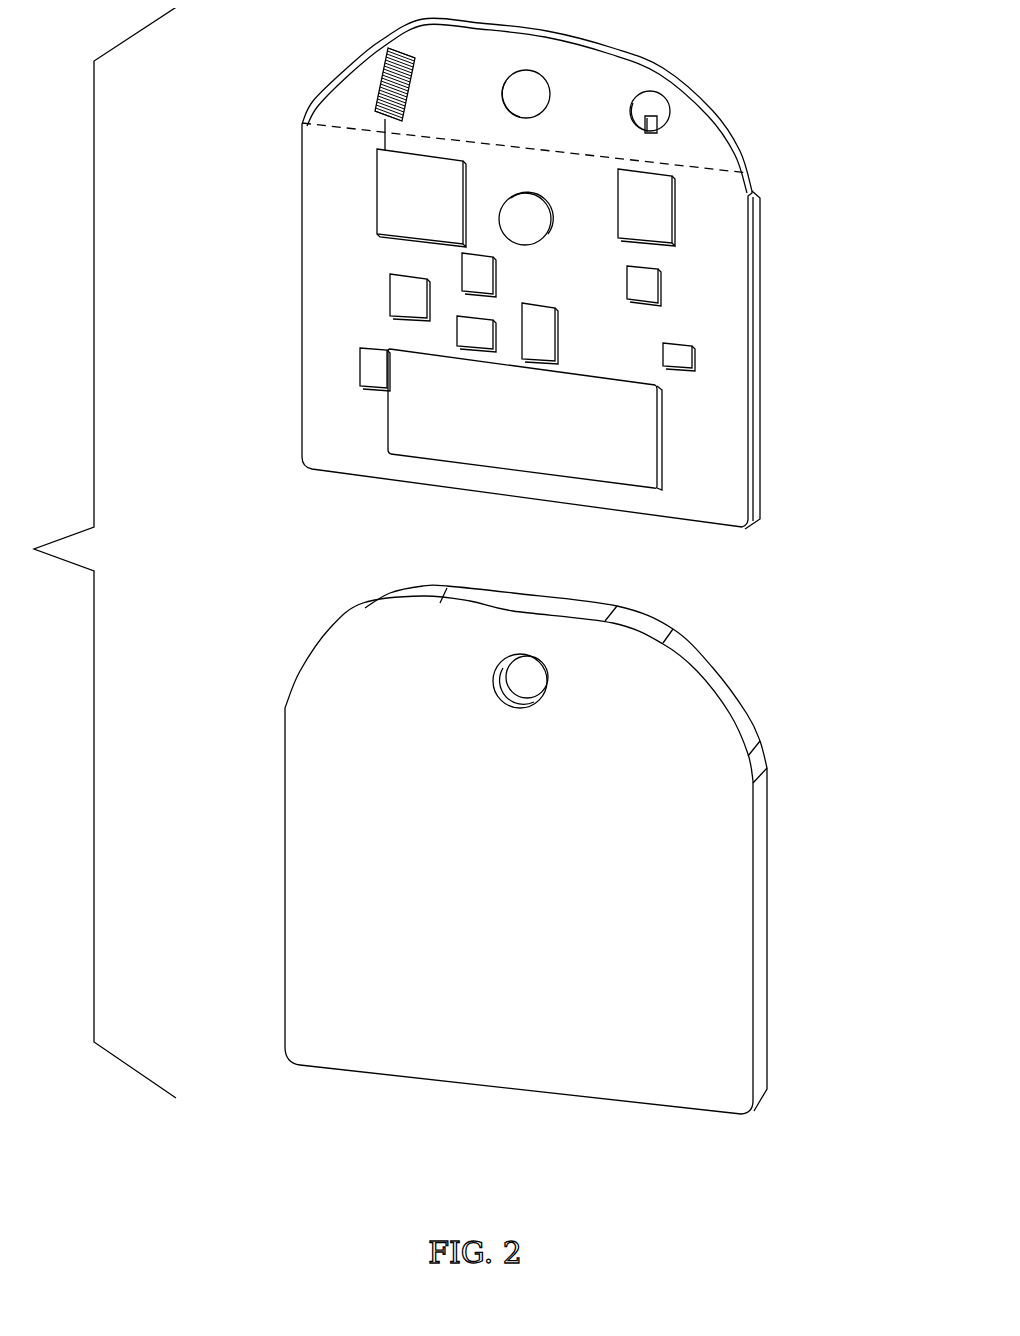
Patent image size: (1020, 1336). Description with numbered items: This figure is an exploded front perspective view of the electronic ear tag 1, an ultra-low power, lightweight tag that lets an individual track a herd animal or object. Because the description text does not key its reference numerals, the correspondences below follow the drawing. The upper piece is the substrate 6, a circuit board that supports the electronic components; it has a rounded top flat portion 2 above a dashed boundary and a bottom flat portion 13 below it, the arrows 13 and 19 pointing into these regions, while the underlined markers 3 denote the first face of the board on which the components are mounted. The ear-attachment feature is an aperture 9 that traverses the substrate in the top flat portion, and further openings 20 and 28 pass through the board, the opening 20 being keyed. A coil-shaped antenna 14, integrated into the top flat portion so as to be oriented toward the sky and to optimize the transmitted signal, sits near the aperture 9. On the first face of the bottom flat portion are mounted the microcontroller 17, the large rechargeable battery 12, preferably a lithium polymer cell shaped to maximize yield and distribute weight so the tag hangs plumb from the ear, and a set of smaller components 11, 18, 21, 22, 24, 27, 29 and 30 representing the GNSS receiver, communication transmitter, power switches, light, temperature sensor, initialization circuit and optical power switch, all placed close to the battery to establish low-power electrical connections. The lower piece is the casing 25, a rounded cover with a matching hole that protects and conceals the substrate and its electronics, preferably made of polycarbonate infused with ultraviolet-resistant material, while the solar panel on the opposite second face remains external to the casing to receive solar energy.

The tracking device 1 is at (860, 87).
The housing 2 is at (325, 103).
The side surface 3 is at (577, 115).
The circuit board 6 is at (308, 282).
The aperture 9 is at (523, 95).
The electronic component 11 is at (552, 328).
The battery 12 is at (655, 462).
The first region 13 is at (334, 153).
The antenna 14 is at (410, 88).
The processor 17 is at (383, 192).
The electronic component 18 is at (400, 290).
The second region 19 is at (705, 193).
The keyed aperture 20 is at (660, 128).
The electronic component 21 is at (668, 218).
The electronic component 22 is at (655, 290).
The electronic component 24 is at (372, 382).
The cover 25 is at (300, 788).
The electronic component 27 is at (675, 368).
The aperture 28 is at (543, 237).
The electronic component 29 is at (490, 260).
The electronic component 30 is at (457, 320).